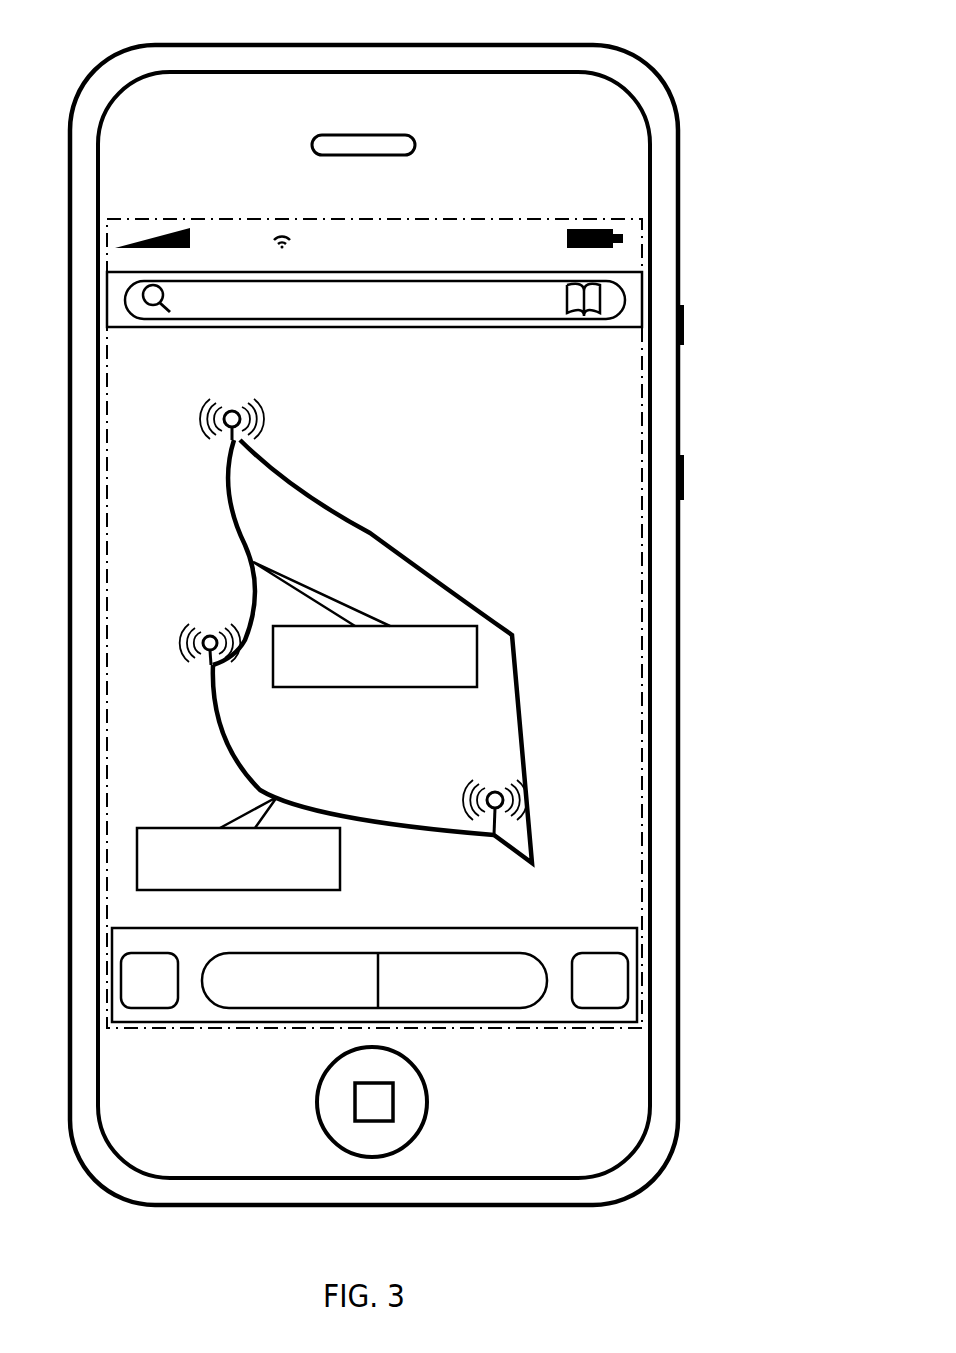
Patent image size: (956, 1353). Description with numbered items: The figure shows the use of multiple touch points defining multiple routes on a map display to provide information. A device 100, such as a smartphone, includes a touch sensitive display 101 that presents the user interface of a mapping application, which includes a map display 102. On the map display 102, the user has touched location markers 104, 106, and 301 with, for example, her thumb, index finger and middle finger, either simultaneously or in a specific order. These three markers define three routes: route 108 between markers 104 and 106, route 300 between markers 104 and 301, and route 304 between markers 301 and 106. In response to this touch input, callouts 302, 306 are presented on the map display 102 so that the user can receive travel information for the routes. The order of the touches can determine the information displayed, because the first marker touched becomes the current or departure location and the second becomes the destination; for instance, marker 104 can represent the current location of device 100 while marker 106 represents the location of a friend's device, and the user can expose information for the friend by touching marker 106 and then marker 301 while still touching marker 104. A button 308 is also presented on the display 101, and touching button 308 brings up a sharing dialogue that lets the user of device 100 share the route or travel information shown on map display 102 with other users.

The device 100 is at (643, 60).
The touch sensitive display 101 is at (643, 358).
The map display 102 is at (582, 440).
The location marker 104 is at (216, 412).
The location marker 106 is at (490, 790).
The route 108 is at (380, 545).
The route 300 is at (240, 530).
The marker 301 is at (202, 655).
The callout 302 is at (282, 688).
The route 304 is at (338, 810).
The callout 306 is at (340, 890).
The button 308 is at (603, 1008).